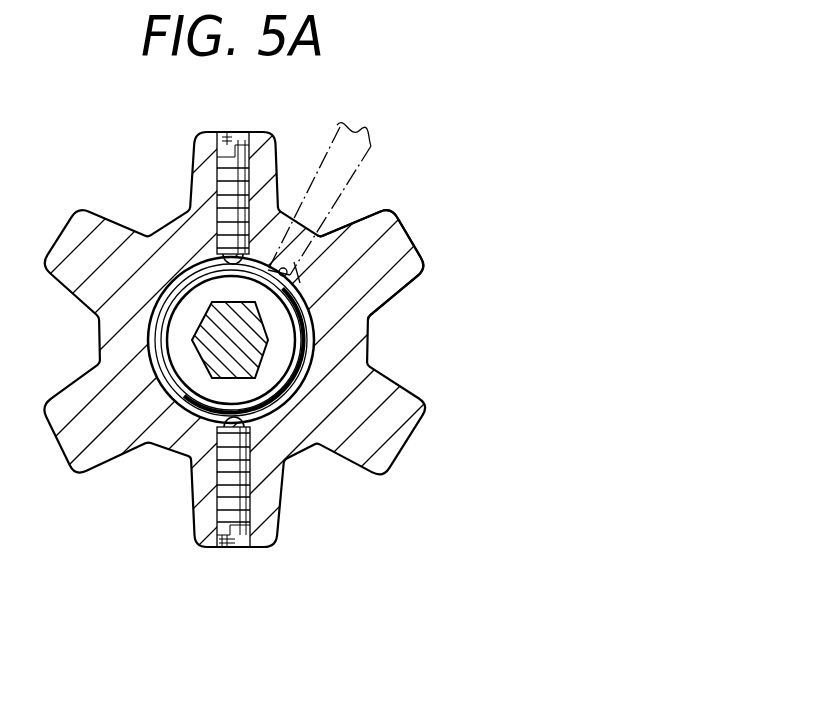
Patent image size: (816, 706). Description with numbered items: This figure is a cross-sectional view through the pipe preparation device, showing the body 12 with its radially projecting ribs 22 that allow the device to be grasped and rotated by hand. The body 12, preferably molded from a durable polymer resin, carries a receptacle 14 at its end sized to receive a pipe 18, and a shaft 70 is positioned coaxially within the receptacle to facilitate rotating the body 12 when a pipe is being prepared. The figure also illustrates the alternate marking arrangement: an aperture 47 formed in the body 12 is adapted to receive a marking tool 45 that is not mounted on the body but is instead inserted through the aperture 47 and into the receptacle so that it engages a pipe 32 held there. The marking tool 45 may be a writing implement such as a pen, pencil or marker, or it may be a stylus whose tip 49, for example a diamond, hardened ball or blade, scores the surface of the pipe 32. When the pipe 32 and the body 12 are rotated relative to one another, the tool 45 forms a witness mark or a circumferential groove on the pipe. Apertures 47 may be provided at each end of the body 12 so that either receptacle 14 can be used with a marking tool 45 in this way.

The body 12 is at (190, 455).
The receptacle 14 is at (210, 385).
The pipe 18 is at (265, 398).
The radially projecting rib 22 is at (404, 235).
The pipe 32 is at (307, 310).
The marking tool 45 is at (373, 152).
The aperture 47 is at (290, 270).
The tip 49 is at (300, 283).
The shaft 70 is at (248, 347).